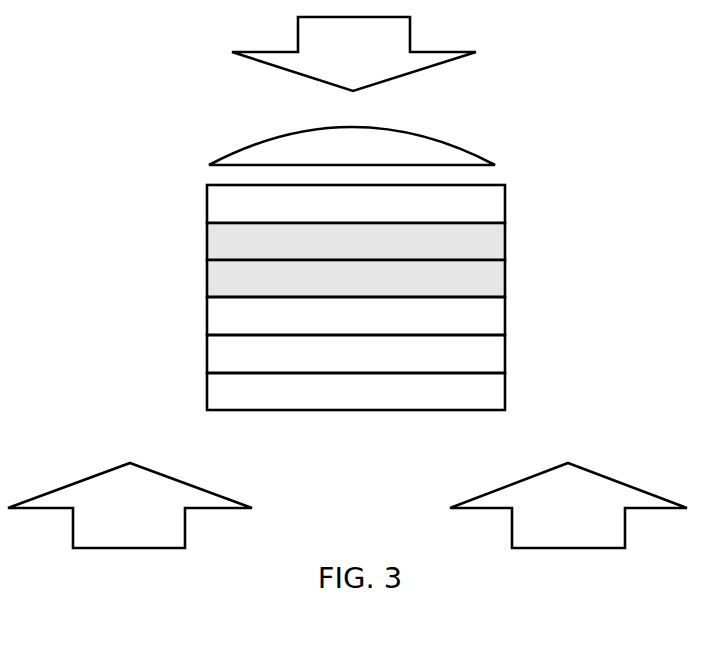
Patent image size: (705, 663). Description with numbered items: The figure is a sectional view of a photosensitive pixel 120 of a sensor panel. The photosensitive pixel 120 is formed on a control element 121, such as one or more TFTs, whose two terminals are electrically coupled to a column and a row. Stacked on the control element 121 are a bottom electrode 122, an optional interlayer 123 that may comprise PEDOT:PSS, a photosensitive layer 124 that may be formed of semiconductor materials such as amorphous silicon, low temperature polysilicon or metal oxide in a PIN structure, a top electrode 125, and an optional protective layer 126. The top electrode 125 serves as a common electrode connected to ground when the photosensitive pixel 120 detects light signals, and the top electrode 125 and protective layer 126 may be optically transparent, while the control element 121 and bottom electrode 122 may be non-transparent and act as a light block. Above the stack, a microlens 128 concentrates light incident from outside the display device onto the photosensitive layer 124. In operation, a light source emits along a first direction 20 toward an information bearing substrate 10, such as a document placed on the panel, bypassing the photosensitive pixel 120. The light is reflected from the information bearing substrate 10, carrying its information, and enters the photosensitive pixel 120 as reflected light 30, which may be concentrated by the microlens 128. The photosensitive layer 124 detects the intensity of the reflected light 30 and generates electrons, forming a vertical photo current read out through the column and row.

The information bearing substrate 10 is at (11, 345).
The first direction 20 is at (178, 491).
The reflected light 30 is at (402, 65).
The photosensitive pixel 120 is at (412, 321).
The control element 121 is at (505, 399).
The bottom electrode 122 is at (505, 362).
The interlayer 123 is at (505, 325).
The photosensitive layer 124 is at (505, 288).
The top electrode 125 is at (505, 251).
The protective layer 126 is at (505, 213).
The microlens 128 is at (482, 152).